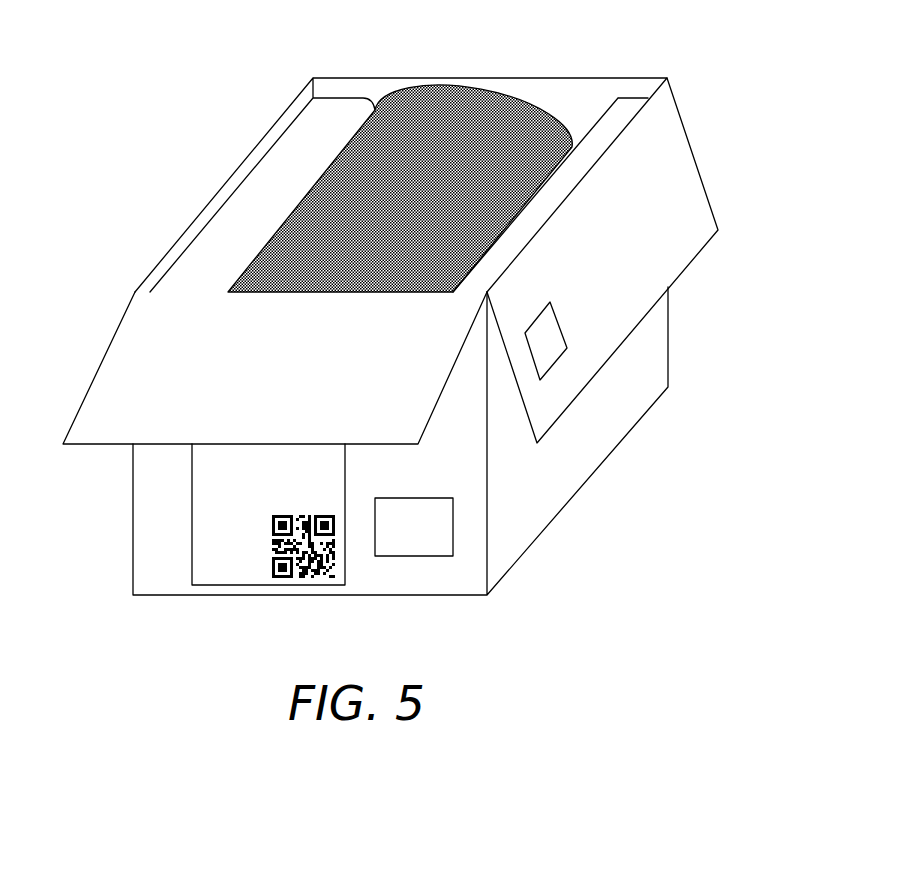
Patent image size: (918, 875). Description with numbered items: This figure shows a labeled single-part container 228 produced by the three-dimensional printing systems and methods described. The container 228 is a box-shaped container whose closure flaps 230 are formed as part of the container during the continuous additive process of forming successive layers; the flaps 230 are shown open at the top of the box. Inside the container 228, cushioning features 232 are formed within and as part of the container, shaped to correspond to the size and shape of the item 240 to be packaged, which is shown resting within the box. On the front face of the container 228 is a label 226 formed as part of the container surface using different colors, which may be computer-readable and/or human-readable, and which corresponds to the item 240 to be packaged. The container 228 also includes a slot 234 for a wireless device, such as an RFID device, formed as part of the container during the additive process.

The label 226 is at (258, 587).
The single-part container 228 is at (150, 522).
The closure flaps 230 is at (133, 345).
The cushioning features 232 is at (277, 160).
The slot 234 is at (442, 527).
The item 240 is at (462, 110).